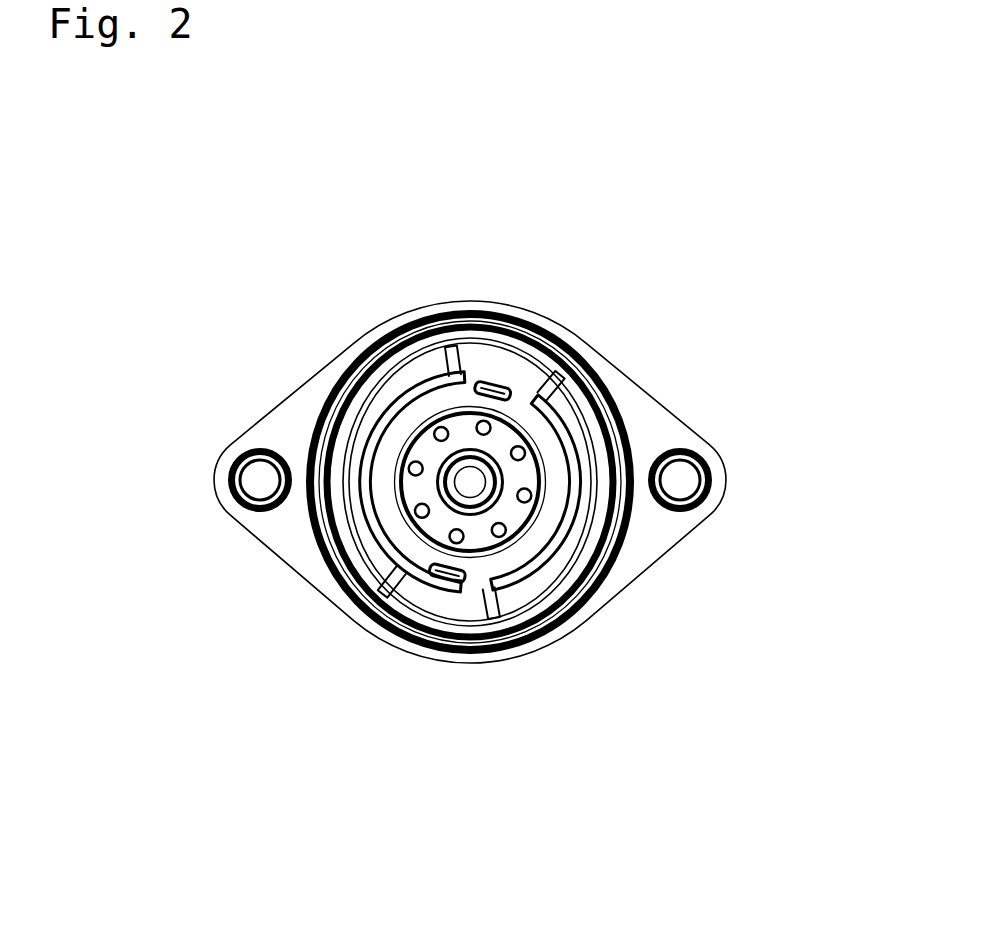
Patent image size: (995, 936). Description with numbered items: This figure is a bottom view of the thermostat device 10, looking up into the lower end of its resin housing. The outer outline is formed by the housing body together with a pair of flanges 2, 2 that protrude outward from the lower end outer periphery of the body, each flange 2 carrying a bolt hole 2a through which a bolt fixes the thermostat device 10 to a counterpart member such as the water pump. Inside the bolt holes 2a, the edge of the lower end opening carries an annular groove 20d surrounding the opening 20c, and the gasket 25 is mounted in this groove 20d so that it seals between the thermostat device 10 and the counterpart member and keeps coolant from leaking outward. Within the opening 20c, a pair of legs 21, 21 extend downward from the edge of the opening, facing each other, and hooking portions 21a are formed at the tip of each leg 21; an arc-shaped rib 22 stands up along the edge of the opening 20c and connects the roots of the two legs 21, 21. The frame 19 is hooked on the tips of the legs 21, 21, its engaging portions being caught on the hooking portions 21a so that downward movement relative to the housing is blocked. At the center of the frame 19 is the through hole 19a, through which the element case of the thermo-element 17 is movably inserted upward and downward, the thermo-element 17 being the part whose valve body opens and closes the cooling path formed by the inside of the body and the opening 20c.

The thermostat device 10 is at (192, 224).
The flange 2 is at (265, 416).
The bolt hole 2a is at (235, 477).
The thermo-element 17 is at (468, 483).
The frame 19 is at (423, 410).
The through hole 19a is at (477, 470).
The opening 20c is at (556, 617).
The annular groove 20d is at (620, 567).
The leg 21 is at (486, 345).
The hooking portion 21a is at (513, 378).
The arc-shaped rib 22 is at (375, 395).
The gasket 25 is at (617, 387).